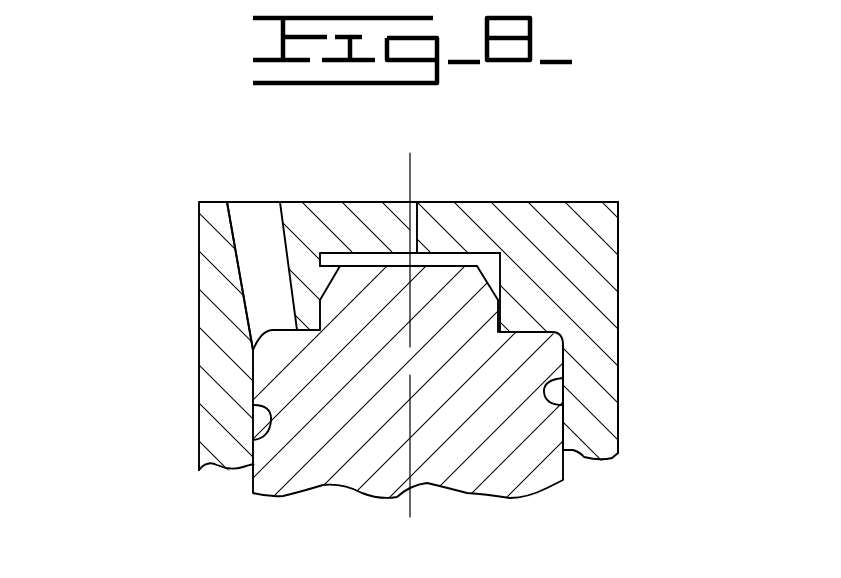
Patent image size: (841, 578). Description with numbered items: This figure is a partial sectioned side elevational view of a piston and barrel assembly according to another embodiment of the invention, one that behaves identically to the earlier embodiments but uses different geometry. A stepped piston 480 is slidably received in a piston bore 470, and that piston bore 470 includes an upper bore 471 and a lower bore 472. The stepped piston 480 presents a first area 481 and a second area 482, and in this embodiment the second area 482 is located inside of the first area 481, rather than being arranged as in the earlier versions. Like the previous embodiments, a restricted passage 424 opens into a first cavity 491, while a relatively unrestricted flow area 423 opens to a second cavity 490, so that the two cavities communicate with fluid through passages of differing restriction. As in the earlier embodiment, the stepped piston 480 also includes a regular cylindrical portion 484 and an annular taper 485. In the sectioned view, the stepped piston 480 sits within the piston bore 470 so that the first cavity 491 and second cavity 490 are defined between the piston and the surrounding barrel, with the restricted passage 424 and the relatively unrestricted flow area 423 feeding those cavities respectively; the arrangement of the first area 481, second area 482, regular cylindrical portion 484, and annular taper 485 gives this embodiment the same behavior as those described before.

The relatively unrestricted flow area 423 is at (242, 272).
The restricted passage 424 is at (405, 253).
The piston bore 470 is at (563, 403).
The upper bore 471 is at (325, 252).
The lower bore 472 is at (253, 440).
The stepped piston 480 is at (253, 486).
The first area 481 is at (273, 328).
The second area 482 is at (460, 262).
The regular cylindrical portion 484 is at (500, 322).
The annular taper 485 is at (500, 266).
The second cavity 490 is at (563, 333).
The first cavity 491 is at (347, 257).